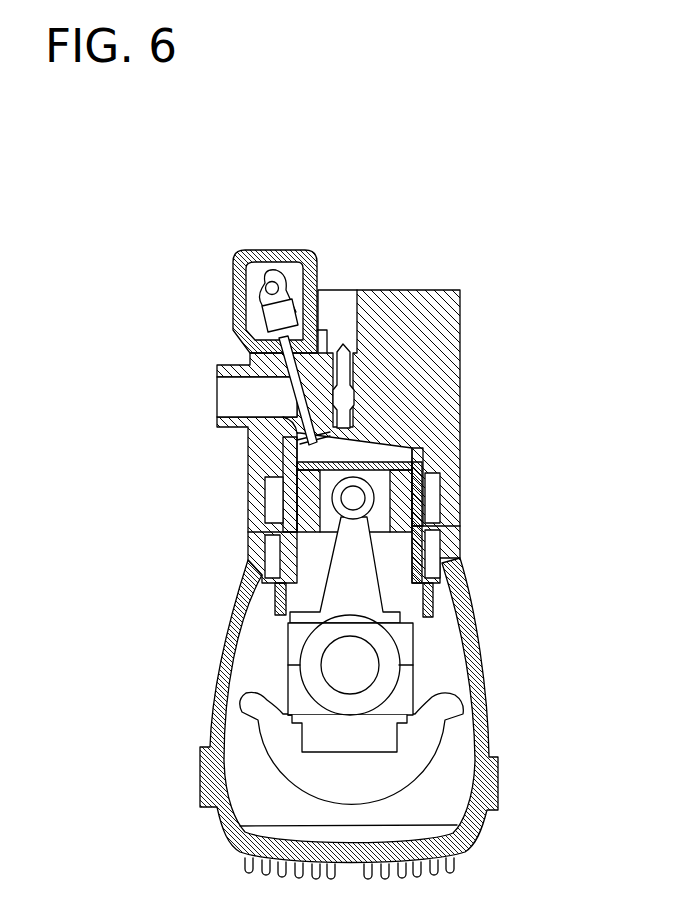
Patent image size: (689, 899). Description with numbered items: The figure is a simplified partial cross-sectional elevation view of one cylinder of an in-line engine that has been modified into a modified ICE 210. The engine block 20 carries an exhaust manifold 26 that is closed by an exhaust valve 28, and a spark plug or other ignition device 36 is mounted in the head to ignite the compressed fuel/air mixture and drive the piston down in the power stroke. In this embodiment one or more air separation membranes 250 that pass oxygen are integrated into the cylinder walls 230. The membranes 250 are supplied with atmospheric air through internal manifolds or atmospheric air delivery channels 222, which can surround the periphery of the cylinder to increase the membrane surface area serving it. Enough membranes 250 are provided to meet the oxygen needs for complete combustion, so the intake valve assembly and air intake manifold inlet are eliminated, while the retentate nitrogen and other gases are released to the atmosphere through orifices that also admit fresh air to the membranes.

The modified ICE 210 is at (160, 258).
The engine block 20 is at (482, 727).
The exhaust manifold 26 is at (233, 402).
The exhaust valve 28 is at (248, 432).
The spark plug or other ignition device 36 is at (345, 357).
The air separation membrane 250 is at (285, 465).
The atmospheric air delivery channel 222 is at (273, 541).
The cylinder wall 230 is at (297, 592).